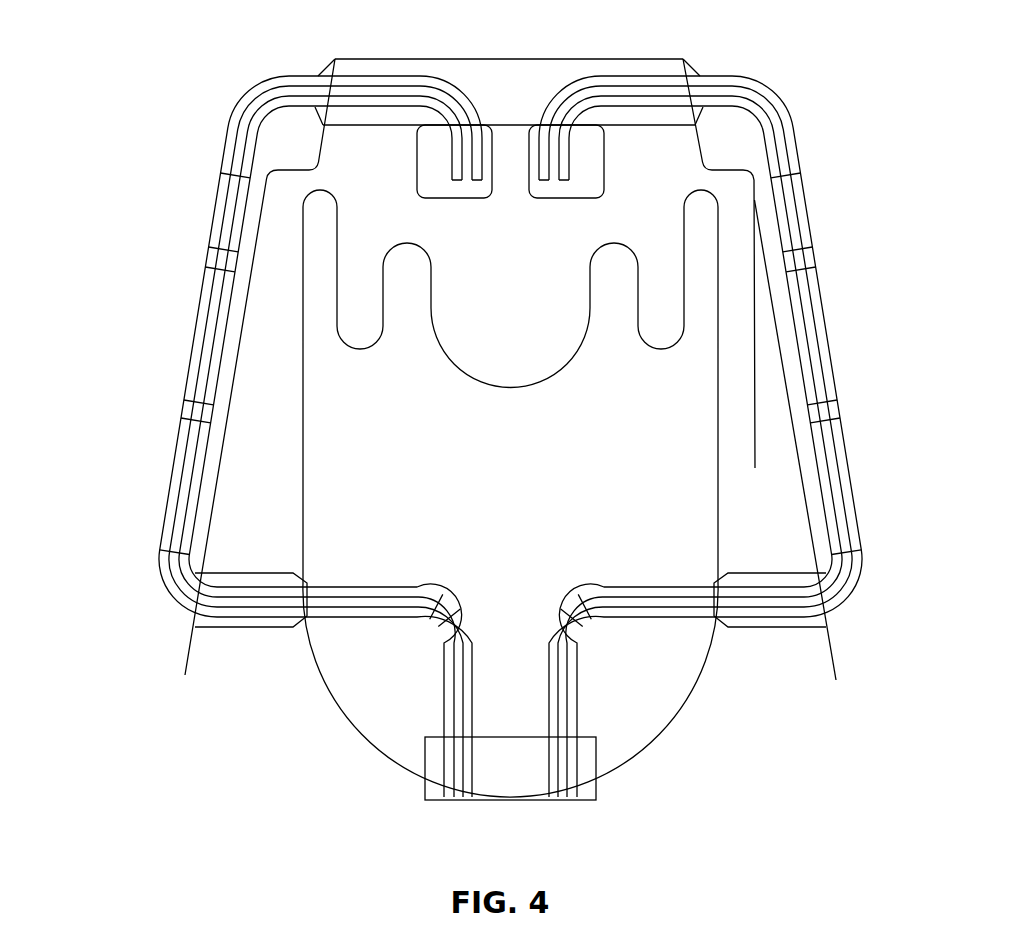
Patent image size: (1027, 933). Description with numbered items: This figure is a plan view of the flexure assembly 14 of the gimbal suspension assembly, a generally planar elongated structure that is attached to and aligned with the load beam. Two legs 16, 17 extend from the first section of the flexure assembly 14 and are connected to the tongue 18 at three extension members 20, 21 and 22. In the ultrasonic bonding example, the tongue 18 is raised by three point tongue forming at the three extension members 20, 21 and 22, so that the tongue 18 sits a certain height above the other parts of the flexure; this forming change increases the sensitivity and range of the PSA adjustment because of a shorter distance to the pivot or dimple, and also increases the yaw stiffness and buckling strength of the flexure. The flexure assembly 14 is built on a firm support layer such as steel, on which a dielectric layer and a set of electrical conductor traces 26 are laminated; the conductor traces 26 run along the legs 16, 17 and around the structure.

The flexure assembly 14 is at (130, 687).
The leg 16 is at (305, 509).
The leg 17 is at (717, 507).
The tongue 18 is at (518, 386).
The extension member 20 is at (603, 232).
The extension member 21 is at (417, 232).
The extension member 22 is at (508, 165).
The electrical conductor traces 26 is at (848, 462).